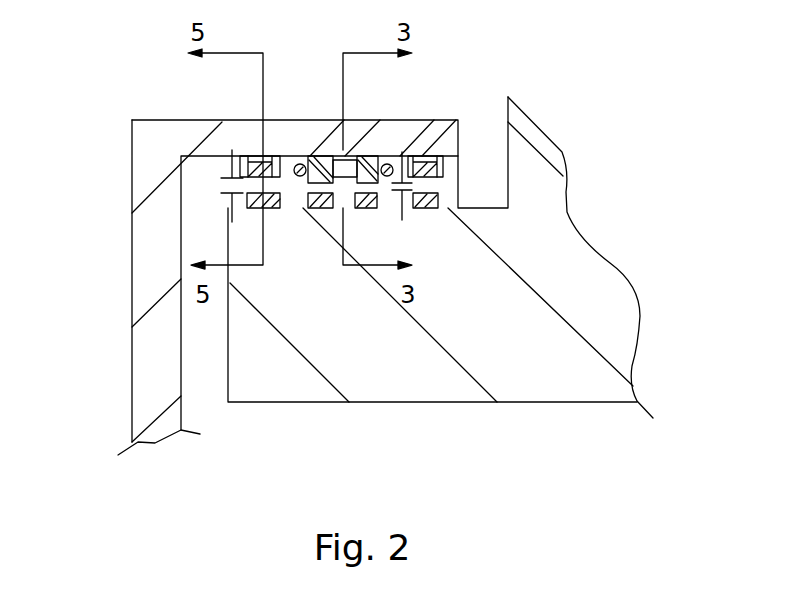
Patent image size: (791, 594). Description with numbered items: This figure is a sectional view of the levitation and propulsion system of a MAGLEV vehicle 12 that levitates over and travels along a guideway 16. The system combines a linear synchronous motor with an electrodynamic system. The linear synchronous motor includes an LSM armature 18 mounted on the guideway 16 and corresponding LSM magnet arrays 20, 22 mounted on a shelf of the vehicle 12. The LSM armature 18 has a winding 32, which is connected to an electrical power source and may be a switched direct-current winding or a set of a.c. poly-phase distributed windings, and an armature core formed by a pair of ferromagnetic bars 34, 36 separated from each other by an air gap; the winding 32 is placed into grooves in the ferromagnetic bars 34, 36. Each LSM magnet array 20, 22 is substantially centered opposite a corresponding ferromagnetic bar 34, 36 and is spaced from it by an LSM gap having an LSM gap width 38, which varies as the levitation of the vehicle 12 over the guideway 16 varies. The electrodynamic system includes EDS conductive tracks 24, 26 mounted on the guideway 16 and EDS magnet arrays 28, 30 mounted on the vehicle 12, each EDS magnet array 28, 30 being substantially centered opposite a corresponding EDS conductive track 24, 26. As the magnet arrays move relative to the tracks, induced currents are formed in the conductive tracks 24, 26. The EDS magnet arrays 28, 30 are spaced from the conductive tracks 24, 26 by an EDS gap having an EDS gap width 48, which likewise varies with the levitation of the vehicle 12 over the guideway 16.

The vehicle 12 is at (465, 402).
The guideway 16 is at (132, 285).
The LSM armature 18 is at (345, 157).
The LSM magnet array 20 is at (322, 208).
The LSM magnet array 22 is at (365, 208).
The EDS conductive track 24 is at (265, 168).
The EDS conductive track 26 is at (445, 168).
The EDS magnet array 28 is at (257, 210).
The EDS magnet array 30 is at (442, 198).
The winding 32 is at (296, 160).
The ferromagnetic bar 34 is at (301, 156).
The ferromagnetic bar 36 is at (382, 162).
The LSM gap width 38 is at (408, 156).
The EDS gap width 48 is at (232, 156).